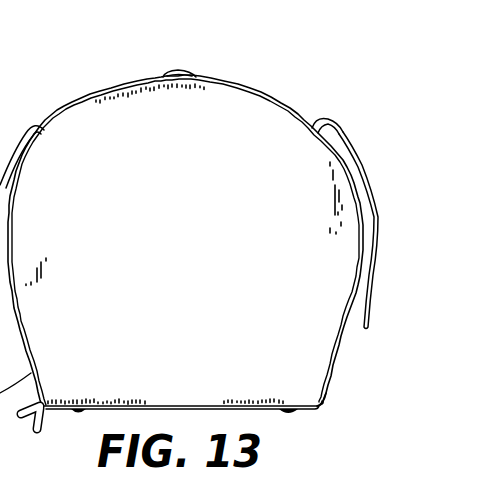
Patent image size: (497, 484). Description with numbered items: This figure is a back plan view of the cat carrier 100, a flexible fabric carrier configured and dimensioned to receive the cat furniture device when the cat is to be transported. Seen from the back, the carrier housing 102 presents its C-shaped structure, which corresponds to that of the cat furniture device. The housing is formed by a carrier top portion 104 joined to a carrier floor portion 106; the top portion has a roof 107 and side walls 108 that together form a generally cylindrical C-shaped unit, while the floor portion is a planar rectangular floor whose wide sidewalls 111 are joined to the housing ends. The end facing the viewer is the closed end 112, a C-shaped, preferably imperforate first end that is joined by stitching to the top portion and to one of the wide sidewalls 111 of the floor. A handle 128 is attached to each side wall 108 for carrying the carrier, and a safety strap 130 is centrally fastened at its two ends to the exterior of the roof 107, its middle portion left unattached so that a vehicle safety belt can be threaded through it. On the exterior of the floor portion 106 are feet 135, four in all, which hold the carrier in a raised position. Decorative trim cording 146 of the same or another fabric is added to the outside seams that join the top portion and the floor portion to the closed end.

The cat carrier 100 is at (307, 35).
The carrier housing 102 is at (245, 82).
The carrier top portion 104 is at (313, 124).
The carrier floor portion 106 is at (259, 412).
The roof 107 is at (203, 78).
The side walls 108 is at (326, 405).
The wide sidewalls 111 is at (183, 408).
The closed end 112 is at (209, 271).
The handle 128 is at (33, 118).
The safety strap 130 is at (178, 71).
The feet 135 is at (78, 415).
The decorative trim cording 146 is at (283, 107).